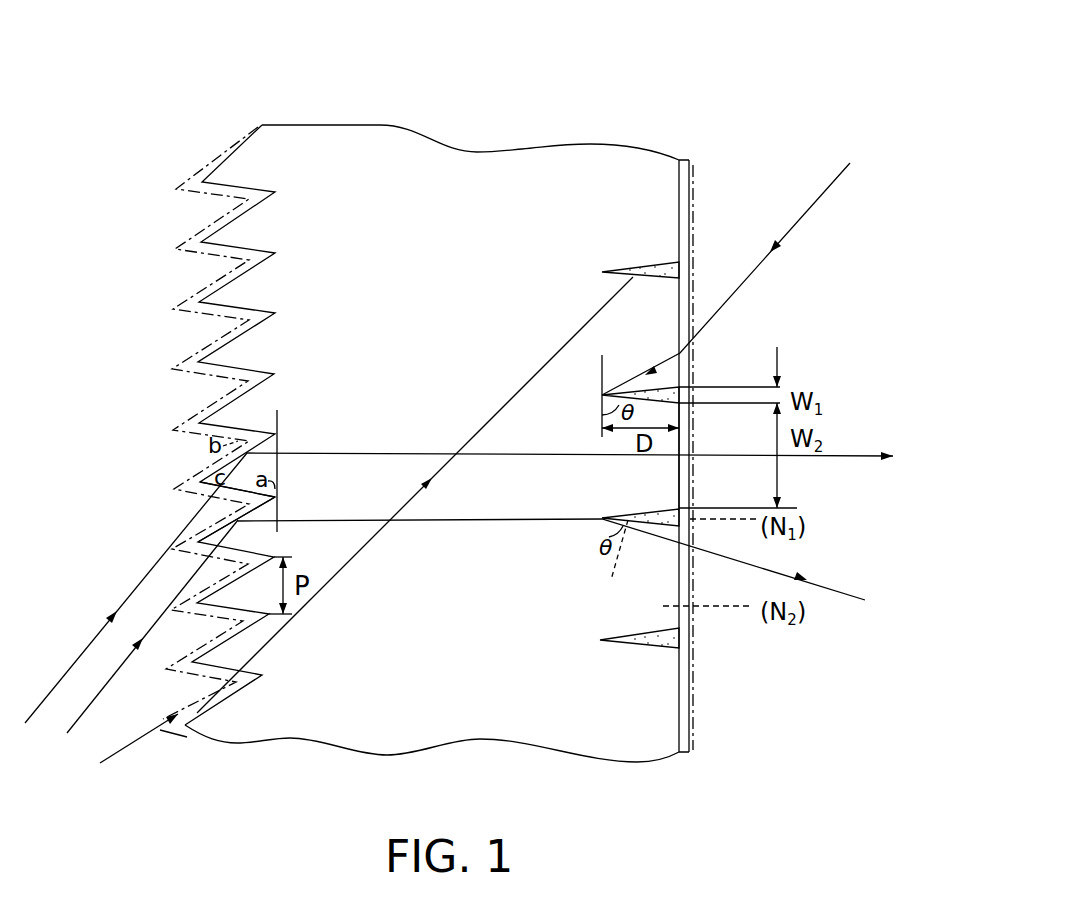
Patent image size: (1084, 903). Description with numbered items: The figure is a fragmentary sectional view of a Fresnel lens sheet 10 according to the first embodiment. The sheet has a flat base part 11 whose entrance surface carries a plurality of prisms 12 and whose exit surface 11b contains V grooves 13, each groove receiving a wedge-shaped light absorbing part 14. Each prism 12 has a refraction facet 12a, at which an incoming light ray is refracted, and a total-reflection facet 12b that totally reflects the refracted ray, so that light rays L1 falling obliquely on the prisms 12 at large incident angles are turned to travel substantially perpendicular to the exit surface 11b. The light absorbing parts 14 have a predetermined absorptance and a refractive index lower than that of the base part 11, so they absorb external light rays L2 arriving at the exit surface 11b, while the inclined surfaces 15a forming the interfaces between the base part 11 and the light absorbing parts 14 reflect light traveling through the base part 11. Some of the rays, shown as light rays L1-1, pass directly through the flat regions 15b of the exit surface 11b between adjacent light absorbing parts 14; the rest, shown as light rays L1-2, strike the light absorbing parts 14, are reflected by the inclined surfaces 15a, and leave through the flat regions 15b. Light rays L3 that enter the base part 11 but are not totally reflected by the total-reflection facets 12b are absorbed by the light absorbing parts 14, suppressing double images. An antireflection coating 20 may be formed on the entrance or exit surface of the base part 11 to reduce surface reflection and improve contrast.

The Fresnel lens sheet 10 is at (655, 98).
The flat base part 11 is at (553, 174).
The exit surface 11b is at (693, 163).
The prism 12 is at (217, 463).
The refraction facet 12a is at (202, 491).
The total-reflection facet 12b is at (207, 465).
The groove 13 is at (681, 290).
The light absorbing part 14 is at (688, 265).
The inclined surface 15a is at (667, 403).
The flat region 15b is at (697, 508).
The antireflection coating 20 is at (217, 160).
The light rays L1 is at (142, 588).
The light rays passing through flat regions L1-1 is at (897, 456).
The light rays falling on light absorbing parts L1-2 is at (862, 598).
The external light rays L2 is at (832, 196).
The light rays not totally reflected L3 is at (115, 758).